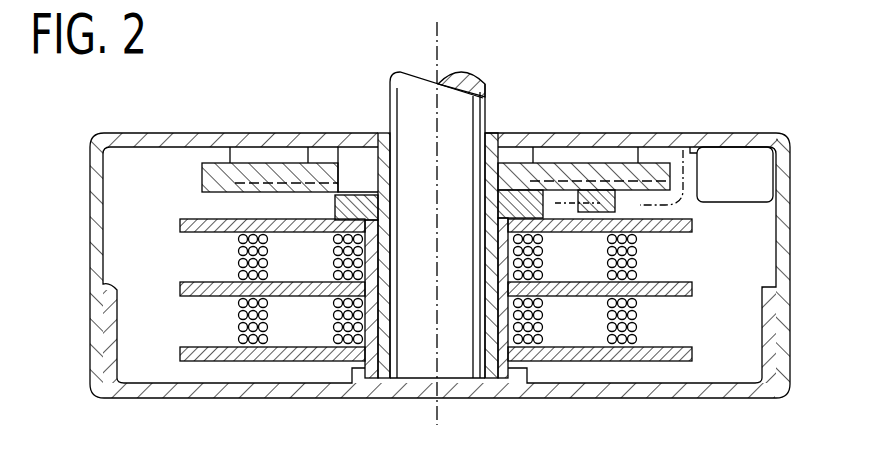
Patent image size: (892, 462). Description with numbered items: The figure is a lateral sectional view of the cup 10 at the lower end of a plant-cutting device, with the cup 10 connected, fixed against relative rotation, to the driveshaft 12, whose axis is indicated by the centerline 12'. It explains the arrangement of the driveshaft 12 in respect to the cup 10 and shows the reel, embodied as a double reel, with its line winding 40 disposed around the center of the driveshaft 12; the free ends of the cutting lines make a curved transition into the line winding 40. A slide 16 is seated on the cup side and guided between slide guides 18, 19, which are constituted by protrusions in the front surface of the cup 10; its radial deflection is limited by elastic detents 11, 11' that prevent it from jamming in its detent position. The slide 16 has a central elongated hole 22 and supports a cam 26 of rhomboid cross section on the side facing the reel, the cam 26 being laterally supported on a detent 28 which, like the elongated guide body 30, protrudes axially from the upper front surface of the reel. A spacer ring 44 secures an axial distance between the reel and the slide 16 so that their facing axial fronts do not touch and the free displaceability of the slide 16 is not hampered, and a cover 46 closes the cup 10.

The cup 10 is at (114, 137).
The elastic detent 11 is at (773, 140).
The elastic detent 11' is at (735, 174).
The driveshaft 12 is at (450, 193).
The shaft axis 12' is at (403, 216).
The slide 16 is at (200, 172).
The slide guide 18 is at (549, 155).
The slide guide 19 is at (255, 153).
The central elongated hole 22 is at (357, 180).
The cam 26 is at (594, 200).
The detent 28 is at (578, 196).
The guide body 30 is at (683, 150).
The line winding 40 is at (636, 262).
The spacer ring 44 is at (328, 212).
The cover 46 is at (712, 390).